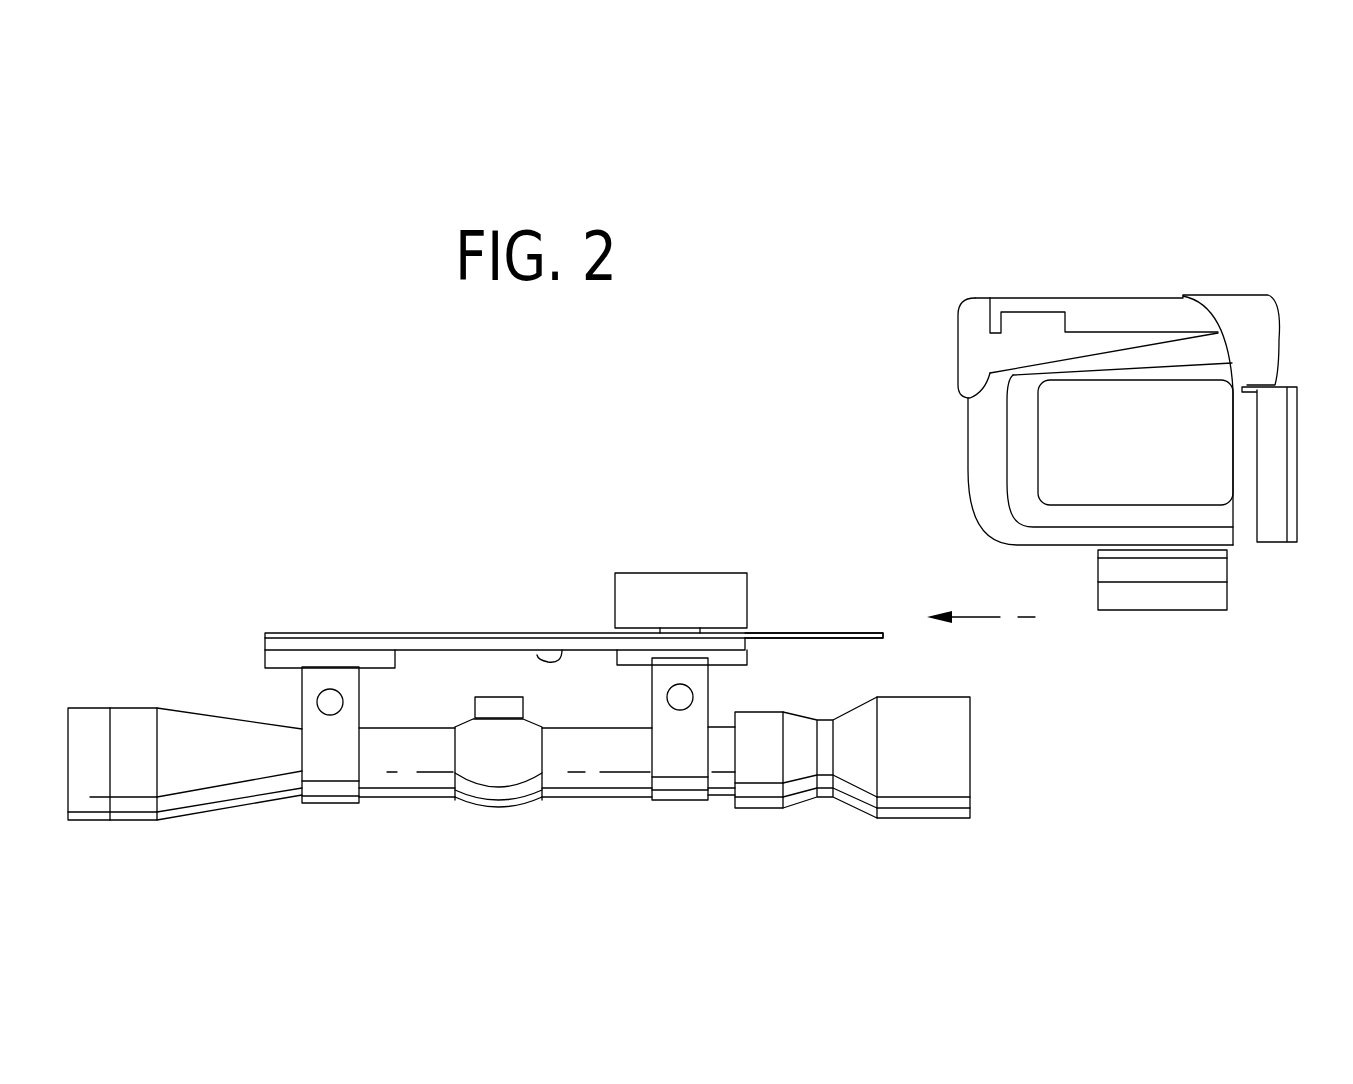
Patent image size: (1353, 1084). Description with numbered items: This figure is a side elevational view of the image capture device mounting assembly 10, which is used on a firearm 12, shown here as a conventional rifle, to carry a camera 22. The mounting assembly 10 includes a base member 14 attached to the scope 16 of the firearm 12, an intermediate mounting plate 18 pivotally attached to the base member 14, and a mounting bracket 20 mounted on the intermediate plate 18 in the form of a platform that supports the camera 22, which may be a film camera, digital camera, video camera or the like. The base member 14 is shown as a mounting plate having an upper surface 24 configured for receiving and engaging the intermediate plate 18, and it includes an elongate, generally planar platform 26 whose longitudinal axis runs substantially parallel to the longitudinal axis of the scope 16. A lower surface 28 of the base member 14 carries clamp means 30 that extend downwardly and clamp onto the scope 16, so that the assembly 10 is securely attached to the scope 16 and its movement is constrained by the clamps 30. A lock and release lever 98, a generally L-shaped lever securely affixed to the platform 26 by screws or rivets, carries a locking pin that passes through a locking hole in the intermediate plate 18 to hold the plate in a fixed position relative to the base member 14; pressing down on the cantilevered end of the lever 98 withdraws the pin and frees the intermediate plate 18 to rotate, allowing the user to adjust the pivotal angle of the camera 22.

The image capture device mounting assembly 10 is at (1245, 226).
The firearm 12 is at (407, 778).
The base member 14 is at (333, 622).
The scope 16 is at (958, 764).
The intermediate mounting plate 18 is at (677, 560).
The mounting bracket 20 is at (1168, 606).
The camera 22 is at (1116, 318).
The upper surface 24 is at (403, 640).
The platform 26 is at (490, 648).
The lower surface 28 is at (562, 650).
The clamp means 30 is at (328, 768).
The lock and release lever 98 is at (825, 620).